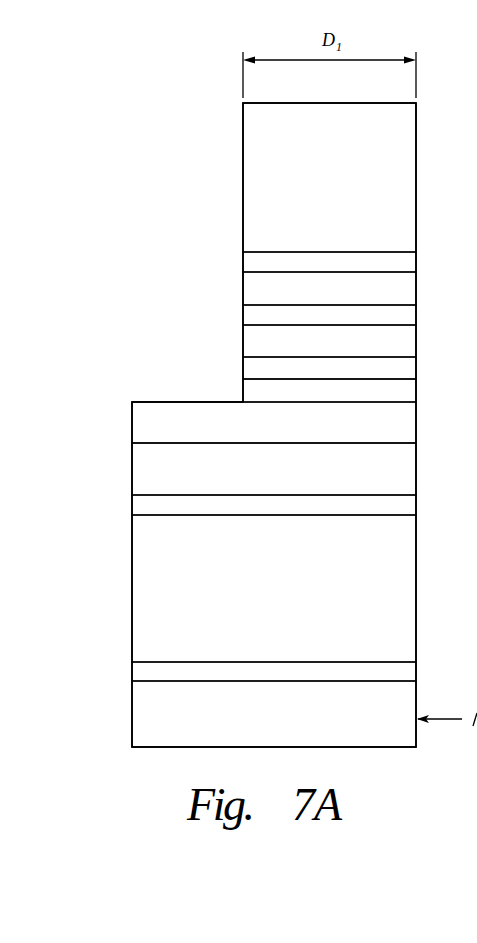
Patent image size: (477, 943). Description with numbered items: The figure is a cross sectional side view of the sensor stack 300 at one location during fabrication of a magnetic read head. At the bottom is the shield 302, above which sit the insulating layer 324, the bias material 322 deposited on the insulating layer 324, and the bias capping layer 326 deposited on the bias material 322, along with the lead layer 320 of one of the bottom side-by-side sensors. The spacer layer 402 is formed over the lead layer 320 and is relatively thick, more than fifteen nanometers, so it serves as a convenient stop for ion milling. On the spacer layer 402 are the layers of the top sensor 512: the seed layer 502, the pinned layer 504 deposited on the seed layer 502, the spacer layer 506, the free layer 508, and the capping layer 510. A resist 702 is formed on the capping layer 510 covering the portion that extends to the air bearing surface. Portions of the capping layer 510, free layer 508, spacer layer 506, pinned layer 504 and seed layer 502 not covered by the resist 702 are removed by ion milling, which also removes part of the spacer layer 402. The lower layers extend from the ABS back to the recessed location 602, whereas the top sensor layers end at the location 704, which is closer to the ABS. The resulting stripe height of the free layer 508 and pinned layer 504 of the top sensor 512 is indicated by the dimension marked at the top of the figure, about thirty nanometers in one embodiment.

The sensor stack 300 is at (194, 86).
The shield 302 is at (274, 714).
The lead layer 320 is at (274, 469).
The bias material 322 is at (274, 588).
The insulating layer 324 is at (410, 669).
The bias capping layer 326 is at (410, 503).
The spacer layer 402 is at (274, 411).
The seed layer 502 is at (408, 367).
The pinned layer 504 is at (329, 341).
The spacer layer 506 is at (408, 314).
The free layer 508 is at (329, 288).
The capping layer 510 is at (408, 260).
The sensor 512 is at (235, 272).
The location 602 is at (121, 466).
The resist 702 is at (329, 177).
The location 704 is at (219, 194).